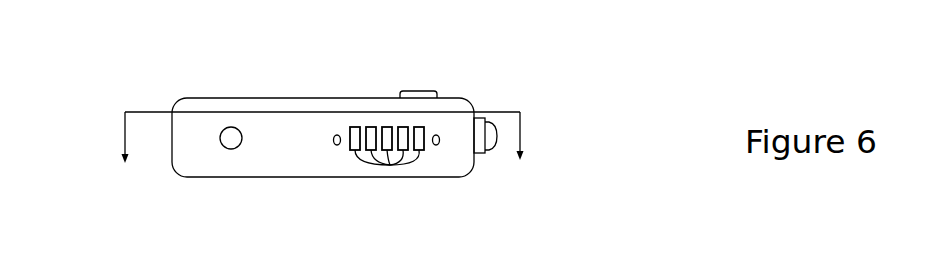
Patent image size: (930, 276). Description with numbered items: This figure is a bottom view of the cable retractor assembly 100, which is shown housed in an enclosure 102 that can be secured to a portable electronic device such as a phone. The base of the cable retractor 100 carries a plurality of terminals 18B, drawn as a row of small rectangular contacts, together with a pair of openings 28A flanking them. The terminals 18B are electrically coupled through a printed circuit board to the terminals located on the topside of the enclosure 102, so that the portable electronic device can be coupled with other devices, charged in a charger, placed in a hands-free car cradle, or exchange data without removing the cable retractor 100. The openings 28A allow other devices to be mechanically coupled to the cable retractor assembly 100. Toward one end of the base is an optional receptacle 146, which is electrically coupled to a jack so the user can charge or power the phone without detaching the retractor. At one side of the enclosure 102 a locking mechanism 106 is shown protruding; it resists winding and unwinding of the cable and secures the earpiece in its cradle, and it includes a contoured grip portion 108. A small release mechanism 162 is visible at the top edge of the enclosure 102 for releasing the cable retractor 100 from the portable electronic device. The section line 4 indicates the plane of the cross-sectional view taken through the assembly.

The section line 4- 4 is at (324, 157).
The cable retractor assembly 100 is at (478, 77).
The enclosure 102 is at (188, 96).
The locking mechanism 106 is at (483, 157).
The contoured grip portion 108 is at (500, 139).
The receptacle 146 is at (223, 148).
The release mechanism 162 is at (413, 83).
The terminals 18B is at (390, 165).
The openings 28A is at (437, 153).